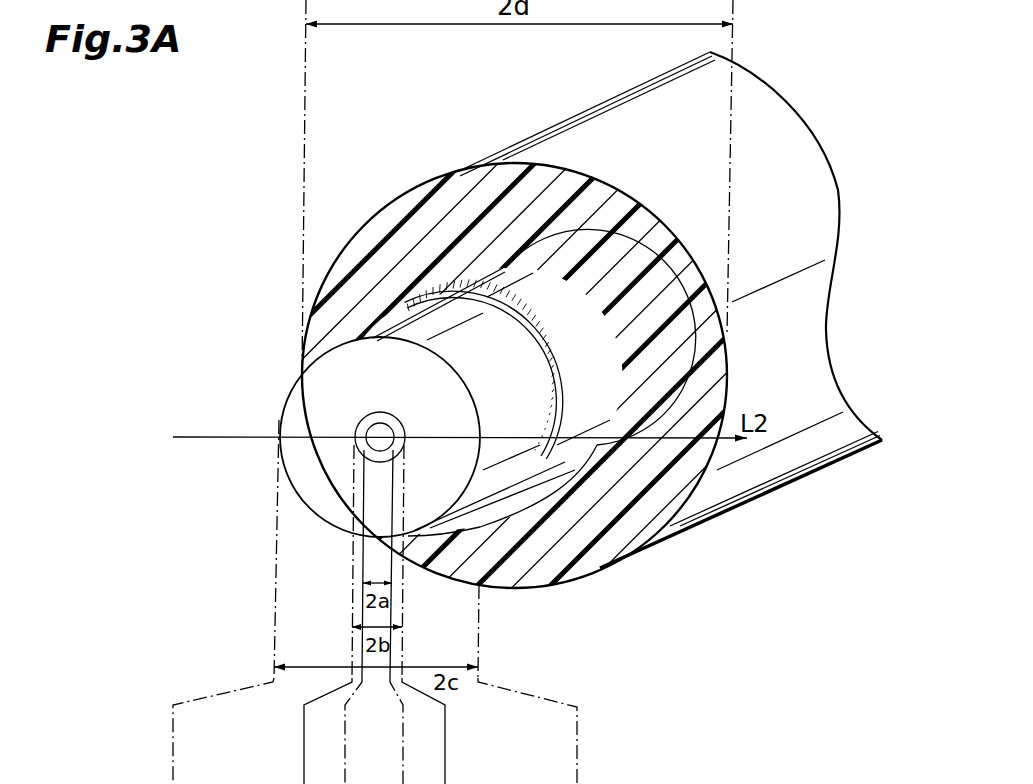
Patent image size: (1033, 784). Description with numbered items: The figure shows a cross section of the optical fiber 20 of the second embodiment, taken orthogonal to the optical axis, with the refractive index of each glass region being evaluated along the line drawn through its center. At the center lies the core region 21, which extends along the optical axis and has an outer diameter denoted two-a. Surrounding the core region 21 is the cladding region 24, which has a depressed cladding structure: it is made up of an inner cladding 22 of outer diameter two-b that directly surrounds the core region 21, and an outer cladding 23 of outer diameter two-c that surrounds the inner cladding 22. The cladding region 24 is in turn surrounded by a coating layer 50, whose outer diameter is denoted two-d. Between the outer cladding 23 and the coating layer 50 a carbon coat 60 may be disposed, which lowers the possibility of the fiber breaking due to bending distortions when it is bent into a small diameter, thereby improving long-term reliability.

The optical fiber 20 is at (704, 132).
The core region 21 is at (355, 428).
The inner cladding 22 is at (316, 387).
The outer cladding 23 is at (300, 372).
The cladding region 24 is at (363, 402).
The coating layer 50 is at (574, 541).
The carbon coat 60 is at (536, 298).